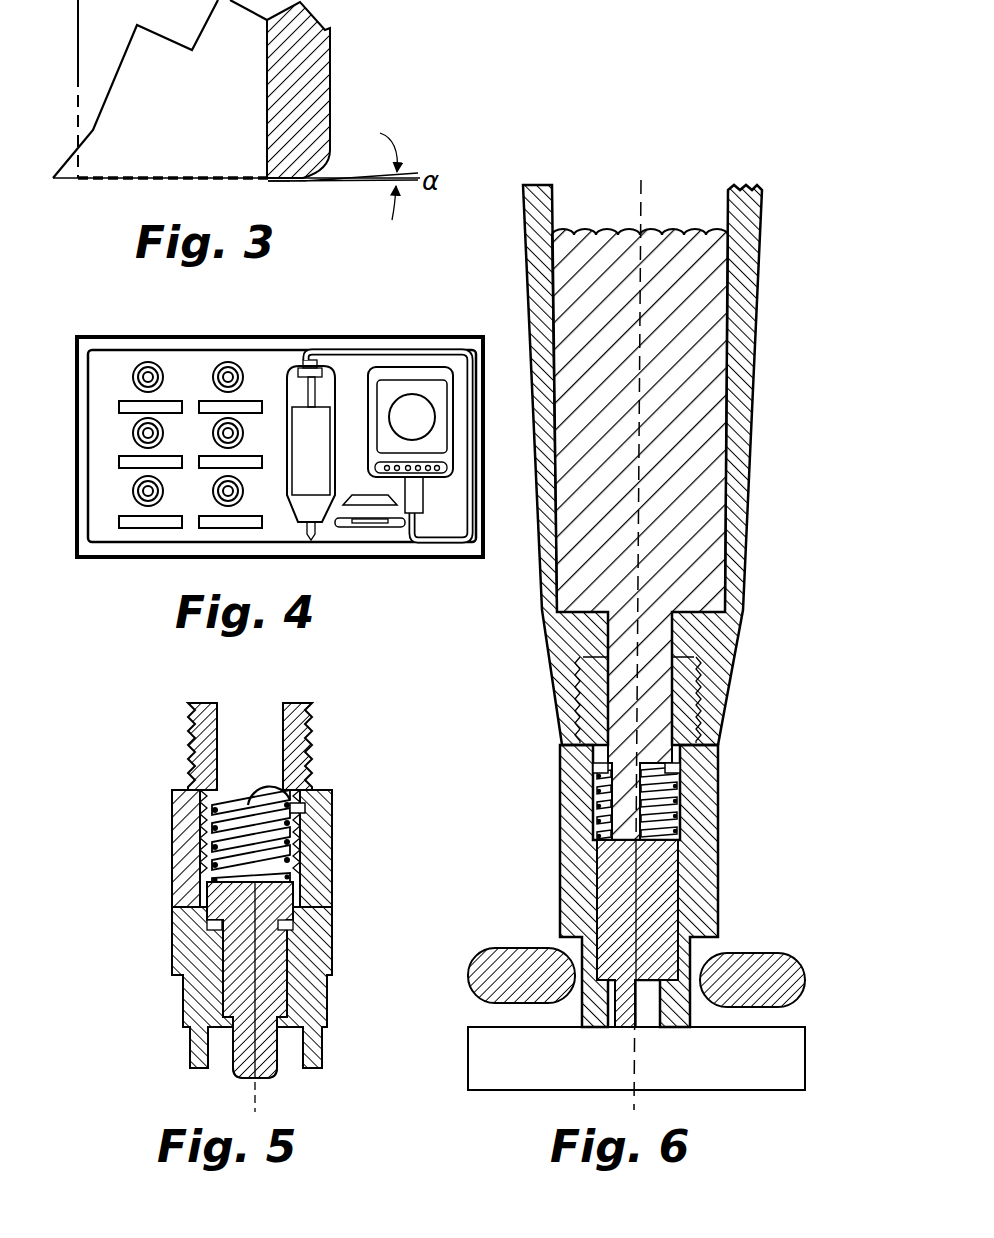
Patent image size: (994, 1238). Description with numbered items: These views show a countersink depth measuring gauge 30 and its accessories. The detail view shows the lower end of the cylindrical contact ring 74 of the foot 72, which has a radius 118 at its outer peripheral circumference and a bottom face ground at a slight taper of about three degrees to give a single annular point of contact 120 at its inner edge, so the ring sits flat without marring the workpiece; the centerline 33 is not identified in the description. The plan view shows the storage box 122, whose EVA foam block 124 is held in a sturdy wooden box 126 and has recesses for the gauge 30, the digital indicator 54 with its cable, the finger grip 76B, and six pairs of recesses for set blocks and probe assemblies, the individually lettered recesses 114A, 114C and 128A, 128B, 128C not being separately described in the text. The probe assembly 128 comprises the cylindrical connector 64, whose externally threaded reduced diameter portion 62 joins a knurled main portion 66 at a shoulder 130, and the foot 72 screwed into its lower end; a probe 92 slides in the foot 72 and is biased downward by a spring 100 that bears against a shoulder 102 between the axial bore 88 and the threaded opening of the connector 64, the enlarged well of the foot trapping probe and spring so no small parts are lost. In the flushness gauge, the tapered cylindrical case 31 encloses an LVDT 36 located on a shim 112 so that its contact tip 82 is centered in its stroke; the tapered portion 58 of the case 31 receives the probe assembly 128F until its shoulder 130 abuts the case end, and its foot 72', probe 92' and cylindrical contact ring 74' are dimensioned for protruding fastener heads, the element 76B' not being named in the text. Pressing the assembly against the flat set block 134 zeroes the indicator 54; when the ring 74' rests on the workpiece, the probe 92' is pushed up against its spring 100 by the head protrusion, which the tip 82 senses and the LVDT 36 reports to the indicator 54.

In FIG. 3, the longitudinal axis 33 is at (78, 90).
In FIG. 6, the longitudinal axis 33 is at (645, 193).
In FIG. 3, the cylindrical contact ring 74 is at (341, 90).
In FIG. 5, the cylindrical contact ring 74 is at (311, 1080).
In FIG. 3, the radius 118 is at (335, 182).
In FIG. 3, the single annular point of contact 120 is at (268, 180).
In FIG. 4, the EVA foam block 124 is at (102, 368).
In FIG. 4, the wooden box 126 is at (235, 333).
In FIG. 4, the connector 128A is at (133, 377).
In FIG. 4, the connector 128B is at (133, 432).
In FIG. 4, the connector 128C is at (133, 495).
In FIG. 4, the slot 114A is at (163, 407).
In FIG. 4, the slot 114C is at (142, 530).
In FIG. 4, the countersink depth measuring gauge 30 is at (341, 406).
In FIG. 4, the digital indicator 54 is at (443, 488).
In FIG. 4, the finger grip 76B is at (389, 555).
In FIG. 4, the storage box 122 is at (358, 576).
In FIG. 5, the cylindrical connector 64 is at (168, 845).
In FIG. 6, the cylindrical connector 64 is at (728, 797).
In FIG. 5, the foot 72 is at (206, 987).
In FIG. 5, the shoulder 130 is at (185, 790).
In FIG. 5, the axial bore 88 is at (218, 738).
In FIG. 5, the externally threaded reduced diameter portion 62 is at (313, 748).
In FIG. 5, the main portion 66 is at (307, 862).
In FIG. 5, the probe 92 is at (183, 1053).
In FIG. 5, the spring 100 is at (260, 798).
In FIG. 6, the spring 100 is at (580, 806).
In FIG. 5, the shoulder 102 is at (307, 817).
In FIG. 5, the probe assembly 128 is at (353, 896).
In FIG. 6, the tapered cylindrical case 31 is at (758, 320).
In FIG. 6, the LVDT 36 is at (688, 418).
In FIG. 6, the tapered portion 58 is at (745, 673).
In FIG. 6, the shim 112 is at (585, 605).
In FIG. 6, the ring 76B' is at (471, 996).
In FIG. 6, the probe 92' is at (780, 975).
In FIG. 6, the foot 72' is at (710, 933).
In FIG. 6, the contact tip 82 is at (682, 820).
In FIG. 6, the probe assembly 128F is at (735, 907).
In FIG. 6, the cylindrical contact ring 74' is at (721, 1005).
In FIG. 6, the set block 134 is at (757, 1090).